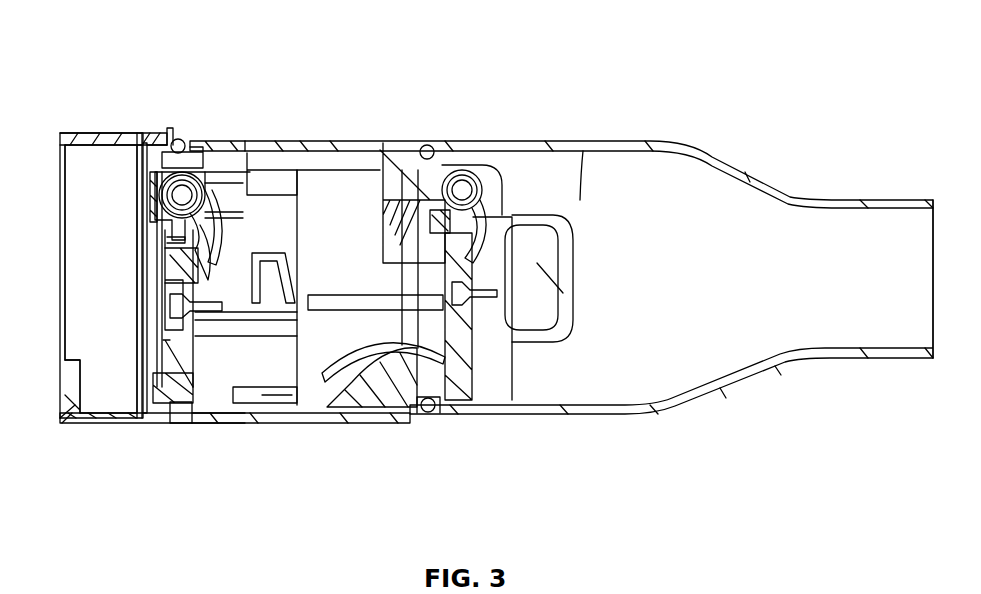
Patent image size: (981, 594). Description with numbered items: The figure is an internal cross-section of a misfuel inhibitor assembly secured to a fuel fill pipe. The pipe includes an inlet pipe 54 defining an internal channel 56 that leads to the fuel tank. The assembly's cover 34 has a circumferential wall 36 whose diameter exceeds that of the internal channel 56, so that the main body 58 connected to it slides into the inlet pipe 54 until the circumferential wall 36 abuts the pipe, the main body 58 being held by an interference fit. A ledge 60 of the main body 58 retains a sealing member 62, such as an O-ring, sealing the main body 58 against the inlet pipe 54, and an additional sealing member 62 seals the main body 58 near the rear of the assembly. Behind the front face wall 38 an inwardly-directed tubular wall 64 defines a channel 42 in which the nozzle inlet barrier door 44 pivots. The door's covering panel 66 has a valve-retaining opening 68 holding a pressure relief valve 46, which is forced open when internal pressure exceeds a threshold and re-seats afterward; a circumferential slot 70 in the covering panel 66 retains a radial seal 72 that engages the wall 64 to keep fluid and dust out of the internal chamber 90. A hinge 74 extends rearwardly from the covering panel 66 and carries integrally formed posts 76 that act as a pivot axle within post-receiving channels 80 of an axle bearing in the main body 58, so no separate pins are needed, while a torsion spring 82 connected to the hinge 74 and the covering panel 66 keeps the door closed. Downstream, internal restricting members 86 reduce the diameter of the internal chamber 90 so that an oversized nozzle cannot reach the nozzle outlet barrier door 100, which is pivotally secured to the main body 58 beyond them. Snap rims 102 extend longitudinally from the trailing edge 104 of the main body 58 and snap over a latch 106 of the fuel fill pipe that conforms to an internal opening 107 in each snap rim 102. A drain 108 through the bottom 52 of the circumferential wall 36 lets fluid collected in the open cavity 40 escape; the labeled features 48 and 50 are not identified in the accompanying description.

The cover 34 is at (150, 133).
The circumferential wall 36 is at (85, 133).
The front face wall 38 is at (150, 190).
The open cavity 40 is at (97, 310).
The channel 42 is at (150, 267).
The nozzle inlet barrier door 44 is at (197, 293).
The pressure relief valve 46 is at (160, 228).
The notch 48 is at (62, 388).
The top wall 50 is at (60, 137).
The bottom 52 is at (80, 427).
The inlet pipe 54 is at (567, 145).
The internal channel 56 is at (630, 203).
The main body 58 is at (252, 153).
The ledge 60 is at (205, 140).
The sealing member 62 is at (182, 140).
The inwardly-directed tubular wall 64 is at (150, 240).
The covering panel 66 is at (195, 340).
The valve-retaining opening 68 is at (386, 150).
The circumferential slot 70 is at (140, 275).
The radial seal 72 is at (172, 295).
The hinge 74 is at (216, 262).
The posts 76 is at (205, 245).
The post-receiving channels 80 is at (148, 135).
The torsion spring 82 is at (190, 245).
The restricting members 86 is at (373, 390).
The internal chamber 90 is at (310, 400).
The nozzle outlet barrier door 100 is at (470, 175).
The snap rim 102 is at (537, 225).
The trailing edge 104 is at (517, 385).
The latch 106 is at (583, 150).
The internal opening 107 is at (583, 147).
The drain 108 is at (118, 427).